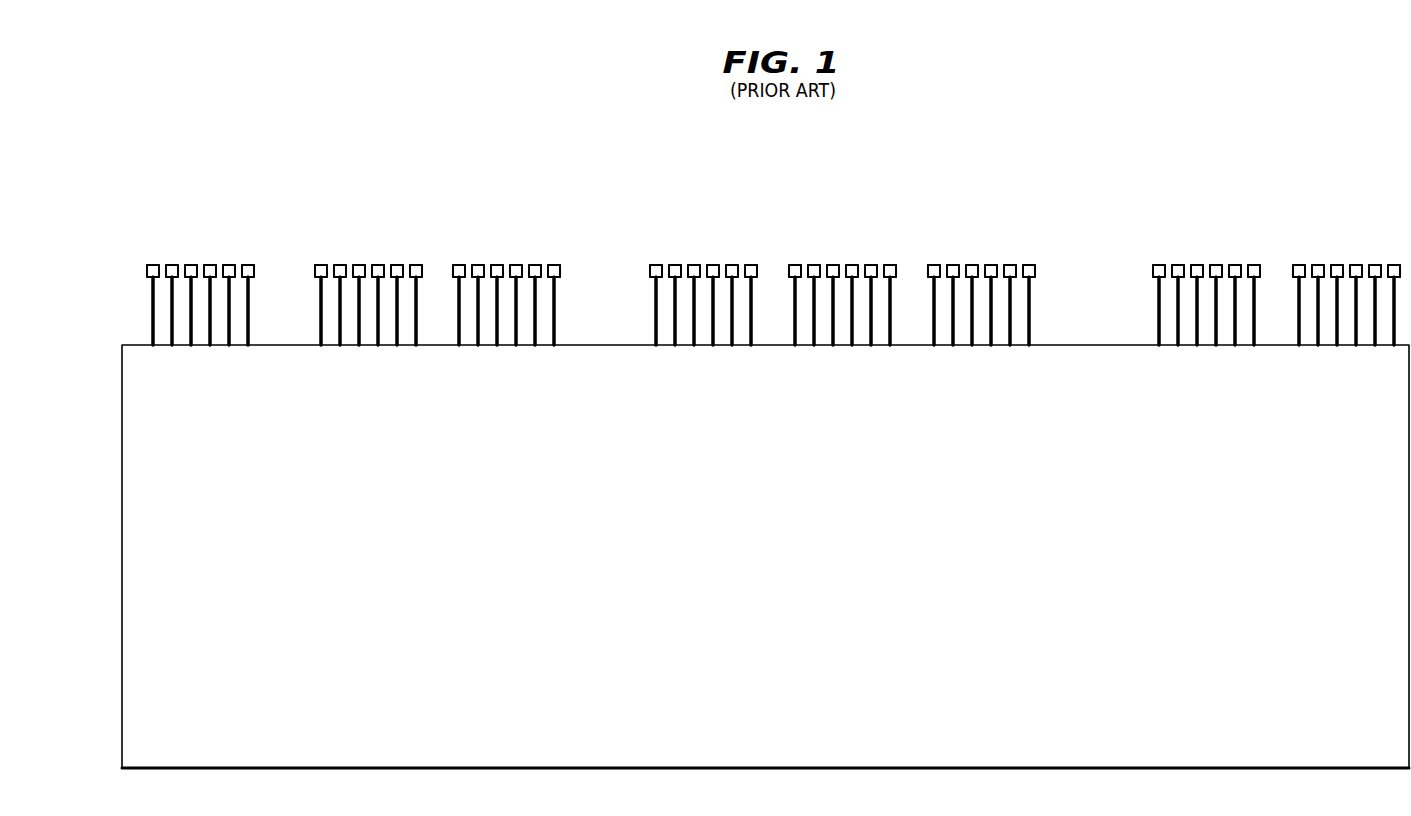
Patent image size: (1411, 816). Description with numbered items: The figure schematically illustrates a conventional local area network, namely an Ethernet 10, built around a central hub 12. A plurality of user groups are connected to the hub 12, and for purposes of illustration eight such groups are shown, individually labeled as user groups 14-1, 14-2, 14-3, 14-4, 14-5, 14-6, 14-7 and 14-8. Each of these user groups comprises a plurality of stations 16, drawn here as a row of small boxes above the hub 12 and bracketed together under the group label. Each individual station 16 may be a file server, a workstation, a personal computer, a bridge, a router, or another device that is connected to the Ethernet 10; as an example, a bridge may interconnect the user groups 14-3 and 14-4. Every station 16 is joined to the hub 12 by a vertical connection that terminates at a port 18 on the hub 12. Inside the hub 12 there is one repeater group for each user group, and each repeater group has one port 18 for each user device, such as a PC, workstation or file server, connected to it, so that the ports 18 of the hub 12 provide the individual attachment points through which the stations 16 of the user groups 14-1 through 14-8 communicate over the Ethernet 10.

The Ethernet 10 is at (458, 148).
The hub 12 is at (122, 558).
The user group 14-1 is at (145, 242).
The user group 14-2 is at (313, 242).
The user group 14-3 is at (451, 242).
The user group 14-4 is at (648, 242).
The user group 14-5 is at (787, 242).
The user group 14-6 is at (926, 242).
The user group 14-7 is at (1151, 220).
The user group 14-8 is at (1291, 242).
The station 16 is at (147, 270).
The port 18 is at (150, 344).